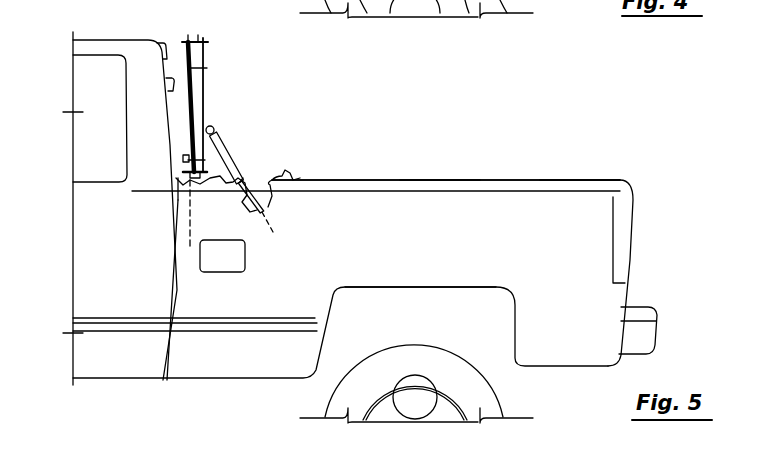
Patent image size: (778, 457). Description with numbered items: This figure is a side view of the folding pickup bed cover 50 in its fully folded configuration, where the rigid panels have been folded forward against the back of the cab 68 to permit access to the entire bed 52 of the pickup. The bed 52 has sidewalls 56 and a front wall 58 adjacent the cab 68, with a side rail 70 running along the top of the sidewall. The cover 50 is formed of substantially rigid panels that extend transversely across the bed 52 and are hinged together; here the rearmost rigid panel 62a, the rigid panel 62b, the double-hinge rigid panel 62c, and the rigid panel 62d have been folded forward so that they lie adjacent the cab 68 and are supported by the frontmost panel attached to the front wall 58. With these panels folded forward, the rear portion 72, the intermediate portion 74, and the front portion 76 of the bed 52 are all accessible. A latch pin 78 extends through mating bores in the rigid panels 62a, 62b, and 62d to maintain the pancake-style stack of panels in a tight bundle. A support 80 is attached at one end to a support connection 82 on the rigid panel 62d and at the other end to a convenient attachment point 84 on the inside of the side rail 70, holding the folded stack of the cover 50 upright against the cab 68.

The folding pickup bed cover 50 is at (325, 79).
The bed 52 is at (653, 233).
The sidewalls 56 is at (500, 270).
The front wall 58 is at (188, 211).
The rearmost rigid panel 62a is at (192, 70).
The rigid panel 62b is at (186, 86).
The rigid panel 62c is at (193, 33).
The rigid panel 62d is at (203, 88).
The cab 68 is at (165, 80).
The left side rail 70 is at (513, 178).
The rear portion 72 is at (548, 170).
The intermediate portion 74 is at (417, 165).
The front portion 76 is at (285, 165).
The latch pin 78 is at (183, 170).
The support 80 is at (232, 152).
The support connection 82 is at (206, 127).
The attachment point 84 is at (273, 232).